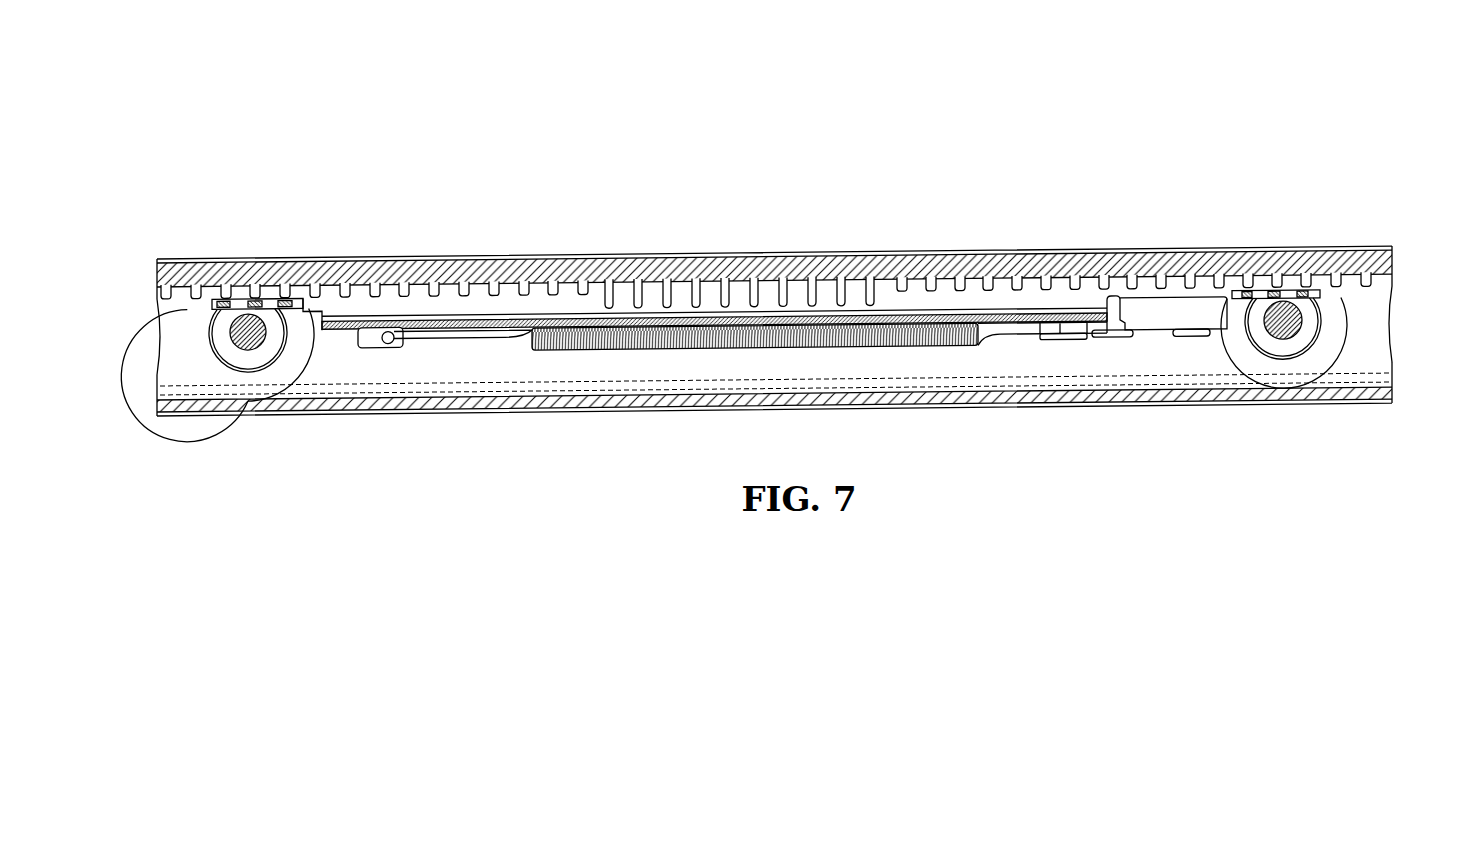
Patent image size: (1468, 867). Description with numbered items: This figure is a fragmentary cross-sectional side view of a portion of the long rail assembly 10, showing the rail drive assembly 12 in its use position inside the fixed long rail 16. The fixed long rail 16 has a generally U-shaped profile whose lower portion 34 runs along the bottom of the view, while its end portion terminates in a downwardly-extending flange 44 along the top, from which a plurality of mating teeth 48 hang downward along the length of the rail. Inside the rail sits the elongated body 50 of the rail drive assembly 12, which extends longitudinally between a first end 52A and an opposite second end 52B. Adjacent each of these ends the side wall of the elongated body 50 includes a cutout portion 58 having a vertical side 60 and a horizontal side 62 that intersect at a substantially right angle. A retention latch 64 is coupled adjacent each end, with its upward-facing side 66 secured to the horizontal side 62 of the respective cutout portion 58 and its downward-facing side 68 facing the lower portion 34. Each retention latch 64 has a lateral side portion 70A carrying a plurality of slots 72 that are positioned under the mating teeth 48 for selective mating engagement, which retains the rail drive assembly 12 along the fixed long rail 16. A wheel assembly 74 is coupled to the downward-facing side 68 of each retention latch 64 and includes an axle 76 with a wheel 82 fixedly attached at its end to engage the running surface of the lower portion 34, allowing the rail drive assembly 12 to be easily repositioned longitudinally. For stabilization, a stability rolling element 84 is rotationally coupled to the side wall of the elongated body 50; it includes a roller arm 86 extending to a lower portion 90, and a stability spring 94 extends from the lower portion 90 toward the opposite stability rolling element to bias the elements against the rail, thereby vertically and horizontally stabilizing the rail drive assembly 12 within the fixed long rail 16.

The long rail assembly 10 is at (1023, 100).
The rail drive assembly 12 is at (1211, 370).
The fixed long rail 16 is at (1386, 409).
The lower portion 34 is at (1010, 415).
The flange 44 is at (1351, 243).
The mating teeth 48 is at (1378, 295).
The elongated body 50 is at (1158, 341).
The first end 52A is at (317, 298).
The second end 52B is at (1220, 292).
The cutout portion 58 is at (1247, 327).
The vertical side 60 is at (1232, 295).
The horizontal side 62 is at (1297, 292).
The retention latch 64 is at (242, 296).
The upward-facing side 66 is at (273, 302).
The downward-facing side 68 is at (298, 313).
The lateral side portion 70A is at (209, 304).
The slots 72 is at (235, 324).
The wheel assembly 74 is at (175, 352).
The axle 76 is at (255, 351).
The wheel 82 is at (247, 402).
The stability rolling element 84 is at (389, 358).
The roller arm 86 is at (378, 329).
The lower portion 90 is at (367, 350).
The stability spring 94 is at (570, 350).